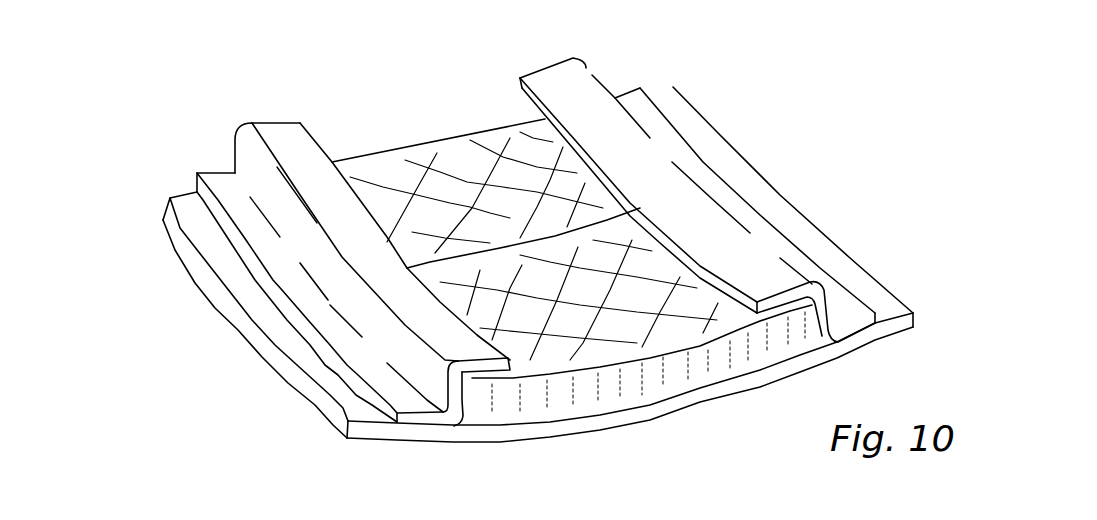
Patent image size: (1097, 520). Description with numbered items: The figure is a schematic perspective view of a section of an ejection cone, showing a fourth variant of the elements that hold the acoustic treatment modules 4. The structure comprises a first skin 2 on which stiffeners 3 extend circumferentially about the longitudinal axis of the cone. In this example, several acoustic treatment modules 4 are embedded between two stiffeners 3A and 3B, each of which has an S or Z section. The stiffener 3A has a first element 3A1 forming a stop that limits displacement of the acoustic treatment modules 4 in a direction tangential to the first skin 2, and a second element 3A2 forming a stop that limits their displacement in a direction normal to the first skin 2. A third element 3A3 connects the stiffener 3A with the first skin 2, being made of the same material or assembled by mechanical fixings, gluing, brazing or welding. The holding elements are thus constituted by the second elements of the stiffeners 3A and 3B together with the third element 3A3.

The first skin 2 is at (347, 440).
The stiffeners 3 is at (461, 256).
The stiffener 3A is at (327, 312).
The stiffener 3B is at (563, 88).
The first element 3A1 is at (463, 398).
The second element 3A2 is at (505, 372).
The third element 3A3 is at (417, 416).
The acoustic treatment modules 4 is at (452, 153).